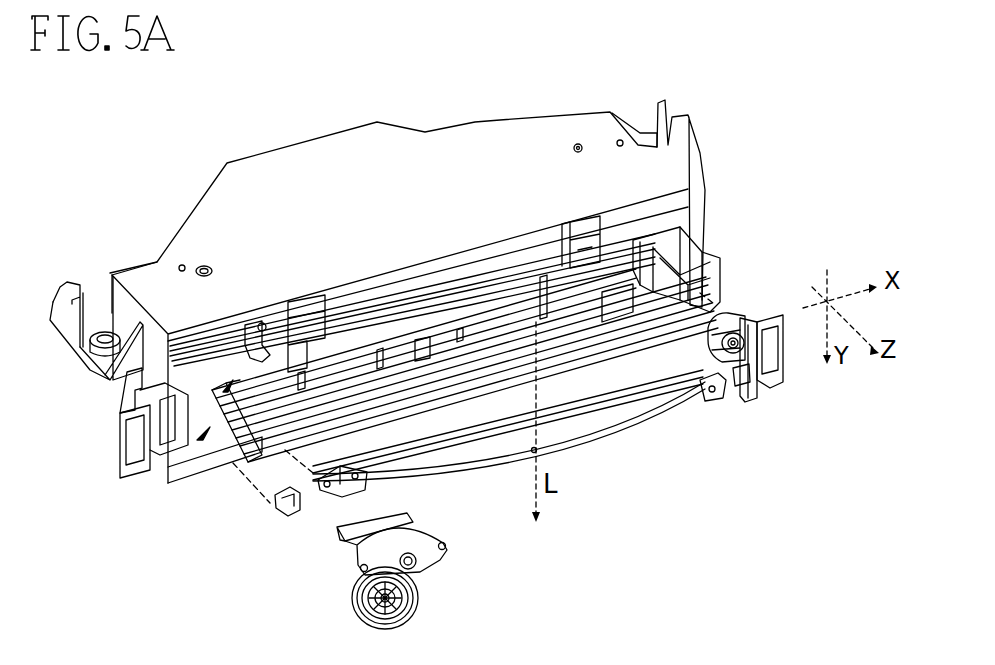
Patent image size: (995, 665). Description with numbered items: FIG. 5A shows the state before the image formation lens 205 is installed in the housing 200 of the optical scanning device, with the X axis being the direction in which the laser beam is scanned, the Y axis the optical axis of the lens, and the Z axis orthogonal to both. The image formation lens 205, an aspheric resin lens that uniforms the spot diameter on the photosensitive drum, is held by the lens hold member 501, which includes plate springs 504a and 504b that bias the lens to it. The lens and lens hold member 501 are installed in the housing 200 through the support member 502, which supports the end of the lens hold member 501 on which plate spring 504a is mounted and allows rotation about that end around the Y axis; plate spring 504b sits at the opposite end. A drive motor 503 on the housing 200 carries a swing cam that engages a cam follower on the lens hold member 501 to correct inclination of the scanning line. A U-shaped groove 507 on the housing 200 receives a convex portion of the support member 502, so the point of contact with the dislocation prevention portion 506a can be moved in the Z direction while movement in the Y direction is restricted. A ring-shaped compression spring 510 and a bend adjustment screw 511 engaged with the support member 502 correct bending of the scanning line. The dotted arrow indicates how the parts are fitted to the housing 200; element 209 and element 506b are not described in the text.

The housing 200 is at (672, 210).
The image formation lens 205 is at (590, 433).
The boss 209 is at (722, 342).
The lens hold member 501 is at (473, 438).
The support member 502 is at (733, 314).
The drive motor 503 is at (372, 552).
The plate spring 504a is at (713, 398).
The plate spring 504b is at (347, 500).
The dislocation prevention portion 506a is at (740, 378).
The fixing member 506b is at (282, 515).
The U-shaped groove 507 is at (700, 263).
The compression spring 510 is at (781, 333).
The bend adjustment screw 511 is at (744, 384).